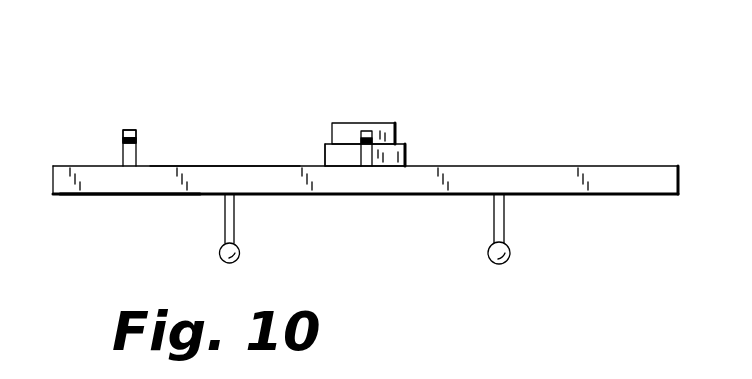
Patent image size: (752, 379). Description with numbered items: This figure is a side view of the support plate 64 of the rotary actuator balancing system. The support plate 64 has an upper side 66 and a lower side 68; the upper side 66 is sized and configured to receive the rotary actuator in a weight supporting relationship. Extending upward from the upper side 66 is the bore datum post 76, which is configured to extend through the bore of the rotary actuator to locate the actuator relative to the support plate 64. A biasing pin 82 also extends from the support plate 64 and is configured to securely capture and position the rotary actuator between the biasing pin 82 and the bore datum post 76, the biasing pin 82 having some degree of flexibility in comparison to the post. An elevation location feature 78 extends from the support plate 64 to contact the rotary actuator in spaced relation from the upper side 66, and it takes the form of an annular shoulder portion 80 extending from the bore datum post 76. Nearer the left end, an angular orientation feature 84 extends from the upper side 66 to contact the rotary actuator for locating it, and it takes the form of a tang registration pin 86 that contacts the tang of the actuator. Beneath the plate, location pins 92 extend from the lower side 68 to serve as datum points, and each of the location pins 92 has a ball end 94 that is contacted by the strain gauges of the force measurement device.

The support plate 64 is at (545, 166).
The upper side 66 is at (216, 166).
The lower side 68 is at (103, 196).
The bore datum post 76 is at (359, 122).
The elevation location feature 78 is at (400, 144).
The annular shoulder portion 80 is at (123, 150).
The biasing pin 82 is at (367, 130).
The angular orientation feature 84 is at (124, 128).
The tang registration pin 86 is at (136, 128).
The location pins 92 is at (225, 223).
The ball end 94 is at (239, 256).